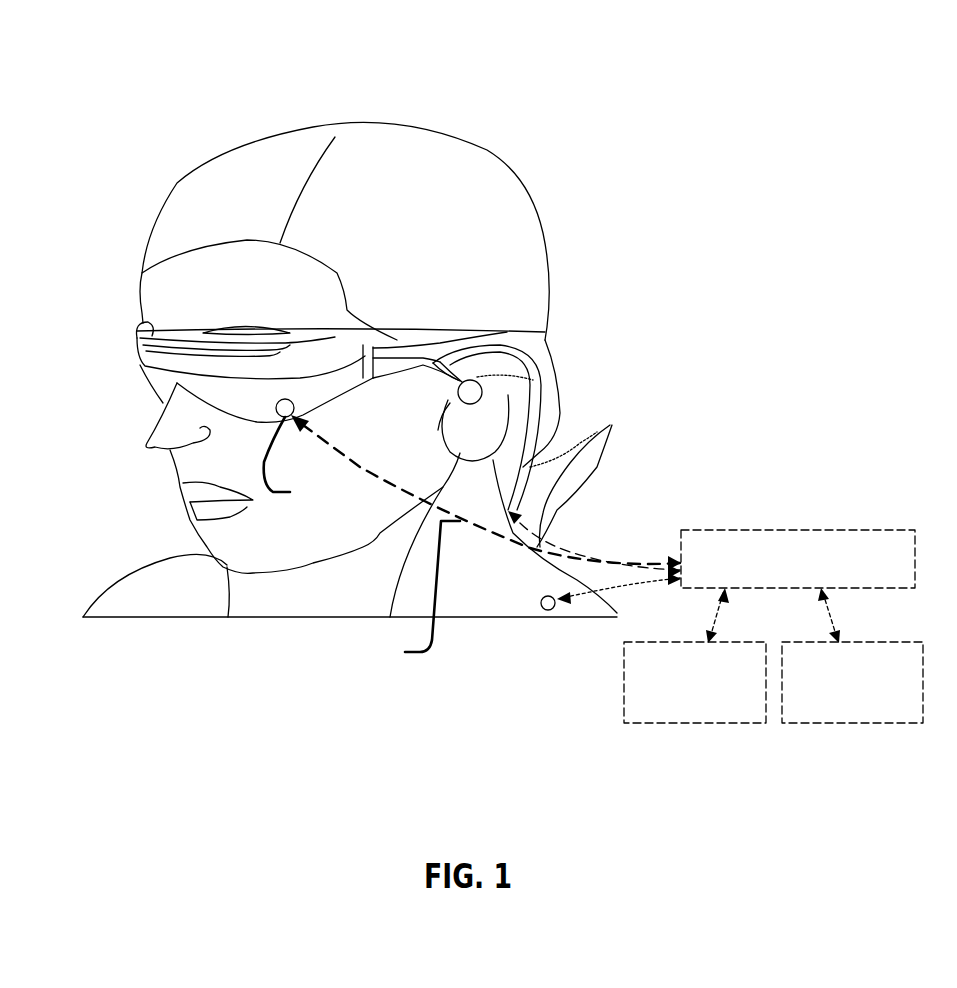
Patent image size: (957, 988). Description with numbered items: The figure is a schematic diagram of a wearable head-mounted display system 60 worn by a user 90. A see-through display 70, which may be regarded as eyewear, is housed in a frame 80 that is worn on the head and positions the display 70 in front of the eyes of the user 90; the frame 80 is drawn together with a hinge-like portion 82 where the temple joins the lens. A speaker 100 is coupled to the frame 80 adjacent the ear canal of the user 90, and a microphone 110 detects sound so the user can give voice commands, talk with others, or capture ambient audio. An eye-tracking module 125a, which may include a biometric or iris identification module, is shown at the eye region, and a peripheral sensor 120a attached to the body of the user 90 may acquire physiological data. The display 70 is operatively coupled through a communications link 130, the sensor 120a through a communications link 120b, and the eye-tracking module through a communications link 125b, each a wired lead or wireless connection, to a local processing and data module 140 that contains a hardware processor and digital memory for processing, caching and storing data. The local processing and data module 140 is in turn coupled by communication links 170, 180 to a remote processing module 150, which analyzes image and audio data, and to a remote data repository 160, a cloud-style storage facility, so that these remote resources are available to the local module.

The head-mounted display system 60 is at (704, 128).
The see-through display 70 is at (147, 382).
The frame 80 is at (425, 340).
The frame hinge 82 is at (487, 330).
The user 90 is at (230, 147).
The speaker 100 is at (533, 370).
The microphone 110 is at (490, 327).
The peripheral sensor 120a is at (548, 611).
The communications link 120b is at (607, 582).
The eye-tracking module 125a is at (301, 453).
The communications link 125b is at (412, 591).
The communications link 130 is at (577, 475).
The local processing and data module 140 is at (742, 528).
The remote processing module 150 is at (677, 727).
The remote data repository 160 is at (810, 727).
The communication link 170 is at (717, 605).
The communication link 180 is at (845, 607).